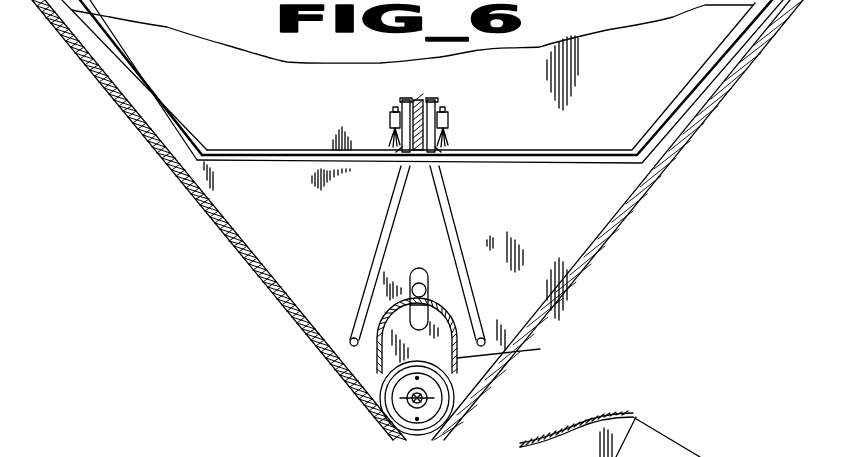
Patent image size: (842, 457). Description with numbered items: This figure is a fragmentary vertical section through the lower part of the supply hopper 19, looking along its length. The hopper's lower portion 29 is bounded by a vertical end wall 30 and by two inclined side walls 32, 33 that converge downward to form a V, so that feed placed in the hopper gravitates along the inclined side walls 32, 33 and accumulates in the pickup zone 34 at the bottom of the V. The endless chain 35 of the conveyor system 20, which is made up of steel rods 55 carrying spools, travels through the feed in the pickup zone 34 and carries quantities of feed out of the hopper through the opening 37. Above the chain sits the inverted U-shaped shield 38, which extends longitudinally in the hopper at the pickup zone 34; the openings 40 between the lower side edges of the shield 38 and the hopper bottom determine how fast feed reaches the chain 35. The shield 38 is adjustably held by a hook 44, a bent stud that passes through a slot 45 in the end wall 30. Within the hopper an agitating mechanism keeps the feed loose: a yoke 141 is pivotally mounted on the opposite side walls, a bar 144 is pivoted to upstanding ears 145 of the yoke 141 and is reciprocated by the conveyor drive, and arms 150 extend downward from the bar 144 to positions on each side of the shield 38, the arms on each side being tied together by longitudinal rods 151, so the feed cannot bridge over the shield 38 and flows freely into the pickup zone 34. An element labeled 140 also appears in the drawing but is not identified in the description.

The supply hopper 19 is at (221, 229).
The conveyor system 20 is at (440, 391).
The lower portion 29 is at (563, 250).
The end wall 30 is at (530, 216).
The inclined side wall 32 is at (638, 198).
The inclined side wall 33 is at (282, 296).
The pickup zone 34 is at (372, 390).
The endless chain 35 is at (407, 409).
The opening 37 is at (434, 419).
The shield 38 is at (512, 350).
The openings 40 is at (378, 388).
The hook 44 is at (421, 281).
The slot 45 is at (427, 321).
The steel rods 55 is at (408, 413).
The platform plate 140 is at (547, 156).
The yoke 141 is at (150, 90).
The bar 144 is at (416, 100).
The upstanding ears 145 is at (402, 100).
The arms 150 is at (397, 204).
The longitudinal rods 151 is at (351, 339).